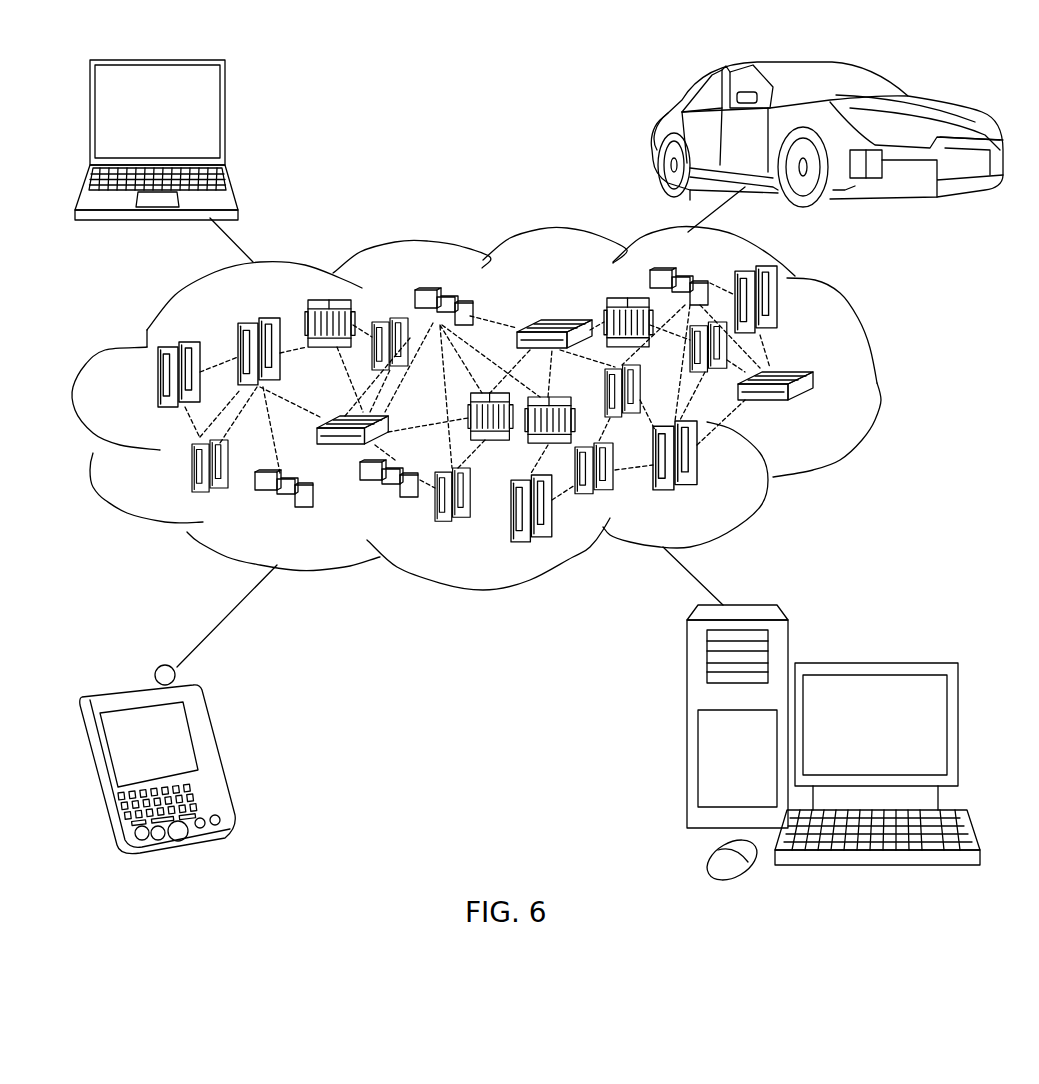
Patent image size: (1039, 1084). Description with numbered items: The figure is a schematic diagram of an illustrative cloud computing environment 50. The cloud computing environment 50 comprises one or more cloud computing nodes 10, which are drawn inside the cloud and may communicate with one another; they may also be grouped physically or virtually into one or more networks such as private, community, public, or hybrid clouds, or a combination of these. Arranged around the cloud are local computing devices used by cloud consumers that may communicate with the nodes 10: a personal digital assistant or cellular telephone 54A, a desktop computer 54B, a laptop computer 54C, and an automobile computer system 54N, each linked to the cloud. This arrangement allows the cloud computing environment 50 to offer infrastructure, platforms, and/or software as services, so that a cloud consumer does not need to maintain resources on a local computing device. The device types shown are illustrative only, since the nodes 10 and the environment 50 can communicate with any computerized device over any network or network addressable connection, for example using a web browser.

The cloud computing node 10 is at (822, 413).
The cloud computing environment 50 is at (873, 383).
The personal digital assistant or cellular telephone 54A is at (215, 753).
The desktop computer 54B is at (872, 663).
The laptop computer 54C is at (226, 119).
The automobile computer system 54N is at (657, 137).